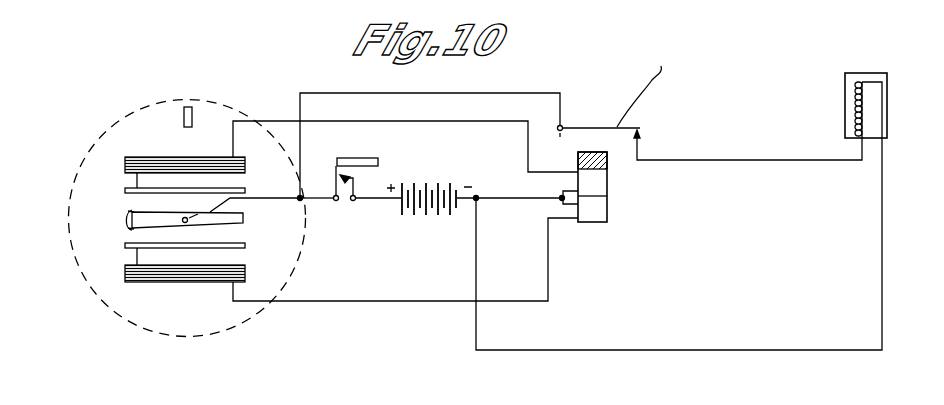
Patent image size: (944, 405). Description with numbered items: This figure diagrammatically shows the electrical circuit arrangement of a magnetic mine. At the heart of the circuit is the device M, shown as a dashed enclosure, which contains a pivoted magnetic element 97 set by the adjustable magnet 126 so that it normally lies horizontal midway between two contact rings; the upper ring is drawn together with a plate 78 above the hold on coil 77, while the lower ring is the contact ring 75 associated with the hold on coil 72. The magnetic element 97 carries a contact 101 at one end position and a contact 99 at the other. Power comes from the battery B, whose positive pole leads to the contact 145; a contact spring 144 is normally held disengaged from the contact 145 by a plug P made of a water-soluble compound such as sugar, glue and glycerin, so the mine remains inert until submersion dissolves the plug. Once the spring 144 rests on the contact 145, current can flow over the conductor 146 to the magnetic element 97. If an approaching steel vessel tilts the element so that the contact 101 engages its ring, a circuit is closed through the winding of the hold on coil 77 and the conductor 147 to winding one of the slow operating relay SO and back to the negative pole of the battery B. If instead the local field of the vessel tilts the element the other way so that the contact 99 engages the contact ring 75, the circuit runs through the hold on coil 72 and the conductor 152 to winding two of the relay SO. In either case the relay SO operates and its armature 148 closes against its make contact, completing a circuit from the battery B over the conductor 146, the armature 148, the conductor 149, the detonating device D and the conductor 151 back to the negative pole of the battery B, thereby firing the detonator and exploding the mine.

The hold on coil 72 is at (163, 283).
The contact ring 75 is at (135, 250).
The hold on coil 77 is at (208, 163).
The upper plate 78 is at (132, 188).
The magnetic element 97 is at (245, 219).
The contact 99 is at (131, 227).
The contact 101 is at (131, 212).
The adjustable magnet 126 is at (183, 107).
The contact spring 144 is at (337, 157).
The contact 145 is at (343, 181).
The conductor 146 is at (290, 200).
The conductor 147 is at (508, 121).
The armature 148 is at (610, 99).
The conductor 149 is at (757, 160).
The conductor 151 is at (780, 348).
The conductor 152 is at (345, 301).
The device M is at (214, 334).
The plug P is at (378, 161).
The battery B is at (459, 189).
The slow operating relay SO is at (597, 187).
The detonating device D is at (875, 105).